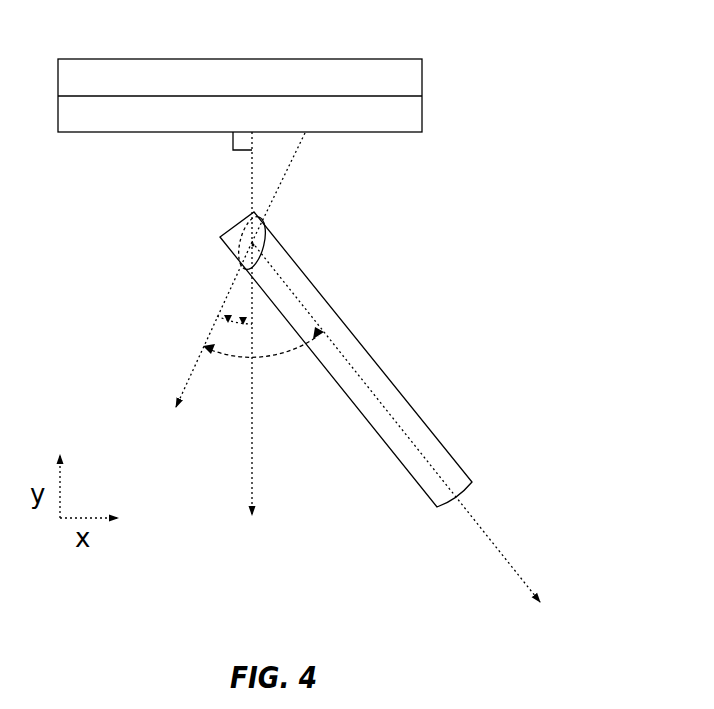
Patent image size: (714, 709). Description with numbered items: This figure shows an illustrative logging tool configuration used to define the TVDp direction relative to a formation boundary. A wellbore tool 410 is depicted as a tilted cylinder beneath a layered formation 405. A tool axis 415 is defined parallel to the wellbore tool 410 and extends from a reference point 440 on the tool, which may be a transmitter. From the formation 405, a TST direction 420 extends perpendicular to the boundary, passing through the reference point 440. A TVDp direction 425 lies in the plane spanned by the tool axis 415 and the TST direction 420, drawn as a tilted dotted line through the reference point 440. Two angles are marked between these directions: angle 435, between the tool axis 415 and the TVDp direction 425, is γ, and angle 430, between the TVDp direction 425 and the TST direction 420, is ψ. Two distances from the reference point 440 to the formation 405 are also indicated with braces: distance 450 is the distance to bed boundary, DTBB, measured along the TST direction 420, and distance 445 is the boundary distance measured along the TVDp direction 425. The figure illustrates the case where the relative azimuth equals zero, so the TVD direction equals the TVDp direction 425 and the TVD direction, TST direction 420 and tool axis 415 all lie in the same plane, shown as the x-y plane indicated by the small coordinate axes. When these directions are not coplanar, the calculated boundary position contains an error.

The formation 405 is at (323, 59).
The wellbore tool 410 is at (410, 402).
The tool axis 415 is at (497, 548).
The TST direction 420 is at (253, 442).
The TVDp direction 425 is at (192, 367).
The angle ψ 430 is at (238, 320).
The angle γ 435 is at (230, 357).
The reference point 440 is at (255, 245).
The boundary distance in the TVDp direction 445 is at (303, 185).
The distance DTBB 450 is at (230, 132).